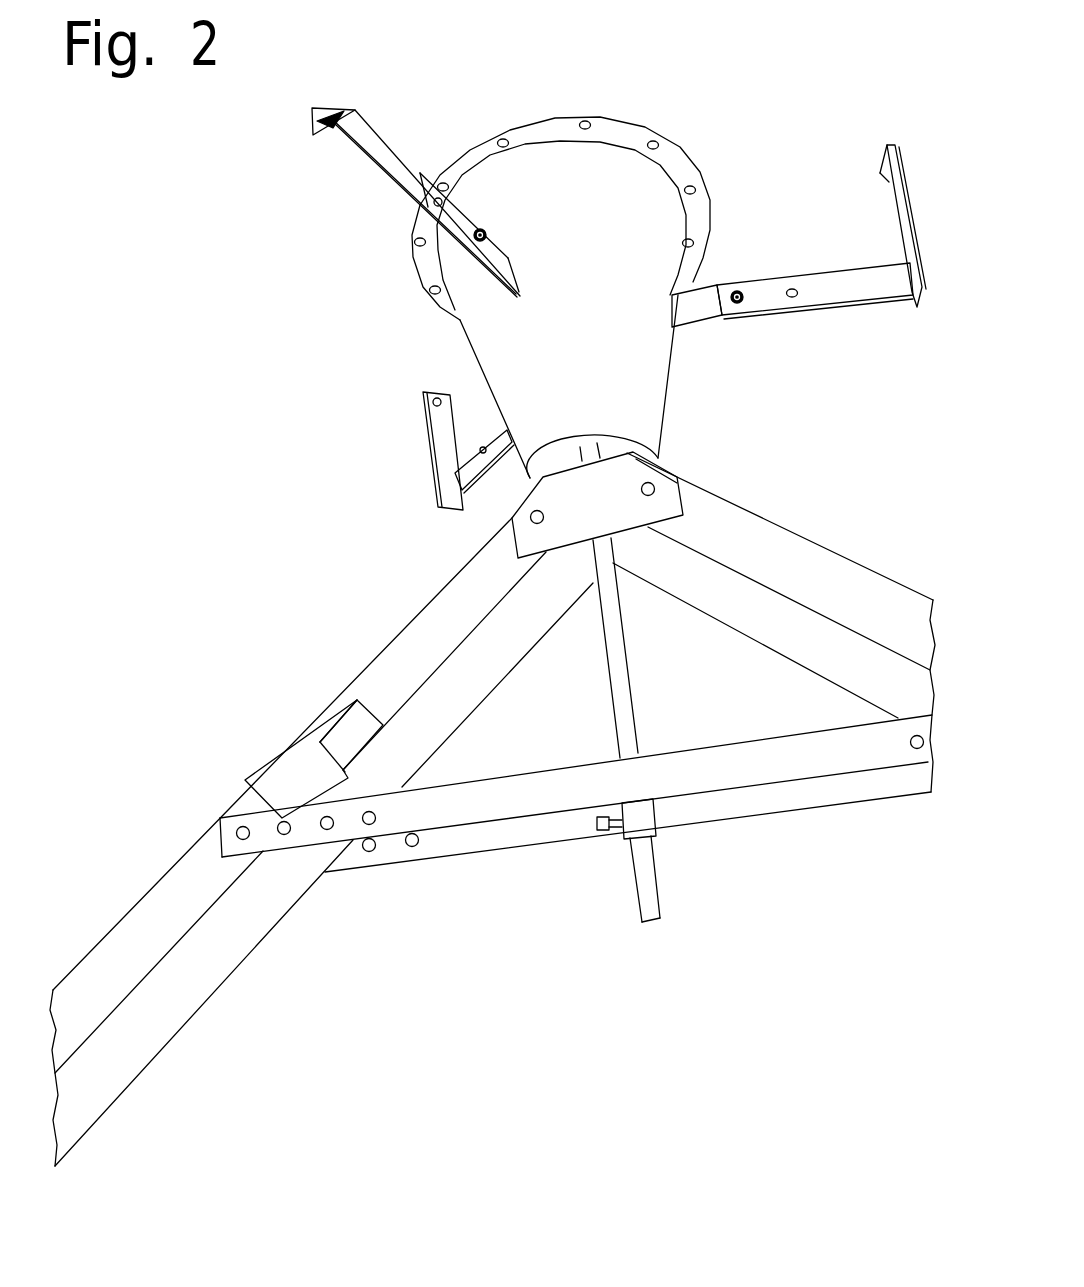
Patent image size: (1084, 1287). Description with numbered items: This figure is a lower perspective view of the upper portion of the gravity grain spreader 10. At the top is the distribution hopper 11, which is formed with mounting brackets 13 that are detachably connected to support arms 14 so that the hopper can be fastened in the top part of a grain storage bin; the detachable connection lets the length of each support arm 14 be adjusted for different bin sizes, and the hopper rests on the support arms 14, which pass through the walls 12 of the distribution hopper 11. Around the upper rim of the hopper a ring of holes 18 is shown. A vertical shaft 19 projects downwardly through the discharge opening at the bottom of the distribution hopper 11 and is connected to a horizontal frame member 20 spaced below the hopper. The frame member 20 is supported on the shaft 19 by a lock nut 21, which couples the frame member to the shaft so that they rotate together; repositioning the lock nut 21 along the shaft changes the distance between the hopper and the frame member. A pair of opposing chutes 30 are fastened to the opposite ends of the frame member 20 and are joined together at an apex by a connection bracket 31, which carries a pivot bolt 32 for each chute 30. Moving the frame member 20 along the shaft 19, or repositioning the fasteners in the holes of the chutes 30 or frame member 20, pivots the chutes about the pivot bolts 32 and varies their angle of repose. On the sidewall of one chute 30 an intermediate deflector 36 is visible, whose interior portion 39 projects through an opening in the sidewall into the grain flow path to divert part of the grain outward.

The gravity grain spreader 10 is at (283, 392).
The distribution hopper 11 is at (650, 380).
The walls 12 is at (648, 187).
The mounting brackets 13 is at (332, 127).
The support arms 14 is at (497, 262).
The bore 18 is at (573, 112).
The vertical shaft 19 is at (627, 713).
The horizontal frame member 20 is at (778, 806).
The lock nut 21 is at (620, 838).
The chutes 30 is at (838, 580).
The connection bracket 31 is at (614, 478).
The pivot bolt 32 is at (657, 490).
The intermediate deflector 36 is at (320, 766).
The interior portion 39 is at (358, 733).